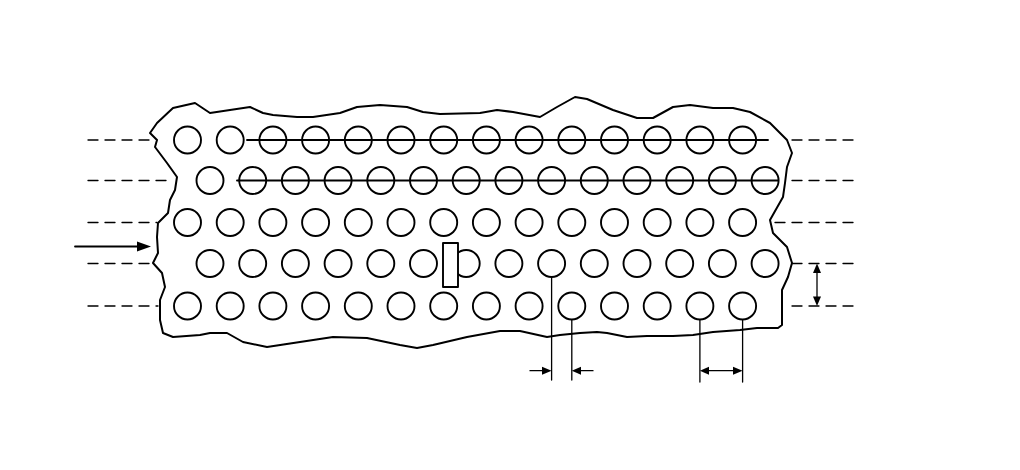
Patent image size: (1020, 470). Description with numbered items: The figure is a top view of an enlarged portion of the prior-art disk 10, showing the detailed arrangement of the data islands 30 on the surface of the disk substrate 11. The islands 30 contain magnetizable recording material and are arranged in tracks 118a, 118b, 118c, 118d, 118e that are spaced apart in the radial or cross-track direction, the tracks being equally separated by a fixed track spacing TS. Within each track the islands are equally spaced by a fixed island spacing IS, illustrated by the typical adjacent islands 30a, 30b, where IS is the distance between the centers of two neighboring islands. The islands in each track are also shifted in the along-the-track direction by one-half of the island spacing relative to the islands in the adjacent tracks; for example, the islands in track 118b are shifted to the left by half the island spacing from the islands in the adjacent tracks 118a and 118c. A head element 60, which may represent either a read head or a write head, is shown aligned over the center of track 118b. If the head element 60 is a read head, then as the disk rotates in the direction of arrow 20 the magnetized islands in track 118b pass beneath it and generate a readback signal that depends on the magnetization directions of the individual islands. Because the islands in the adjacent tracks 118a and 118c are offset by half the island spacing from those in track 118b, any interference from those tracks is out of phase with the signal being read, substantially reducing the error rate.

The disk 10 is at (247, 45).
The disk substrate 11 is at (265, 337).
The arrow 20 is at (92, 245).
The data islands 30 is at (358, 126).
The island 30a is at (694, 319).
The island 30b is at (750, 319).
The head element 60 is at (453, 287).
The track 118a is at (496, 322).
The track 118b is at (497, 311).
The track 118c is at (836, 222).
The track 118d is at (836, 180).
The track 118e is at (496, 116).